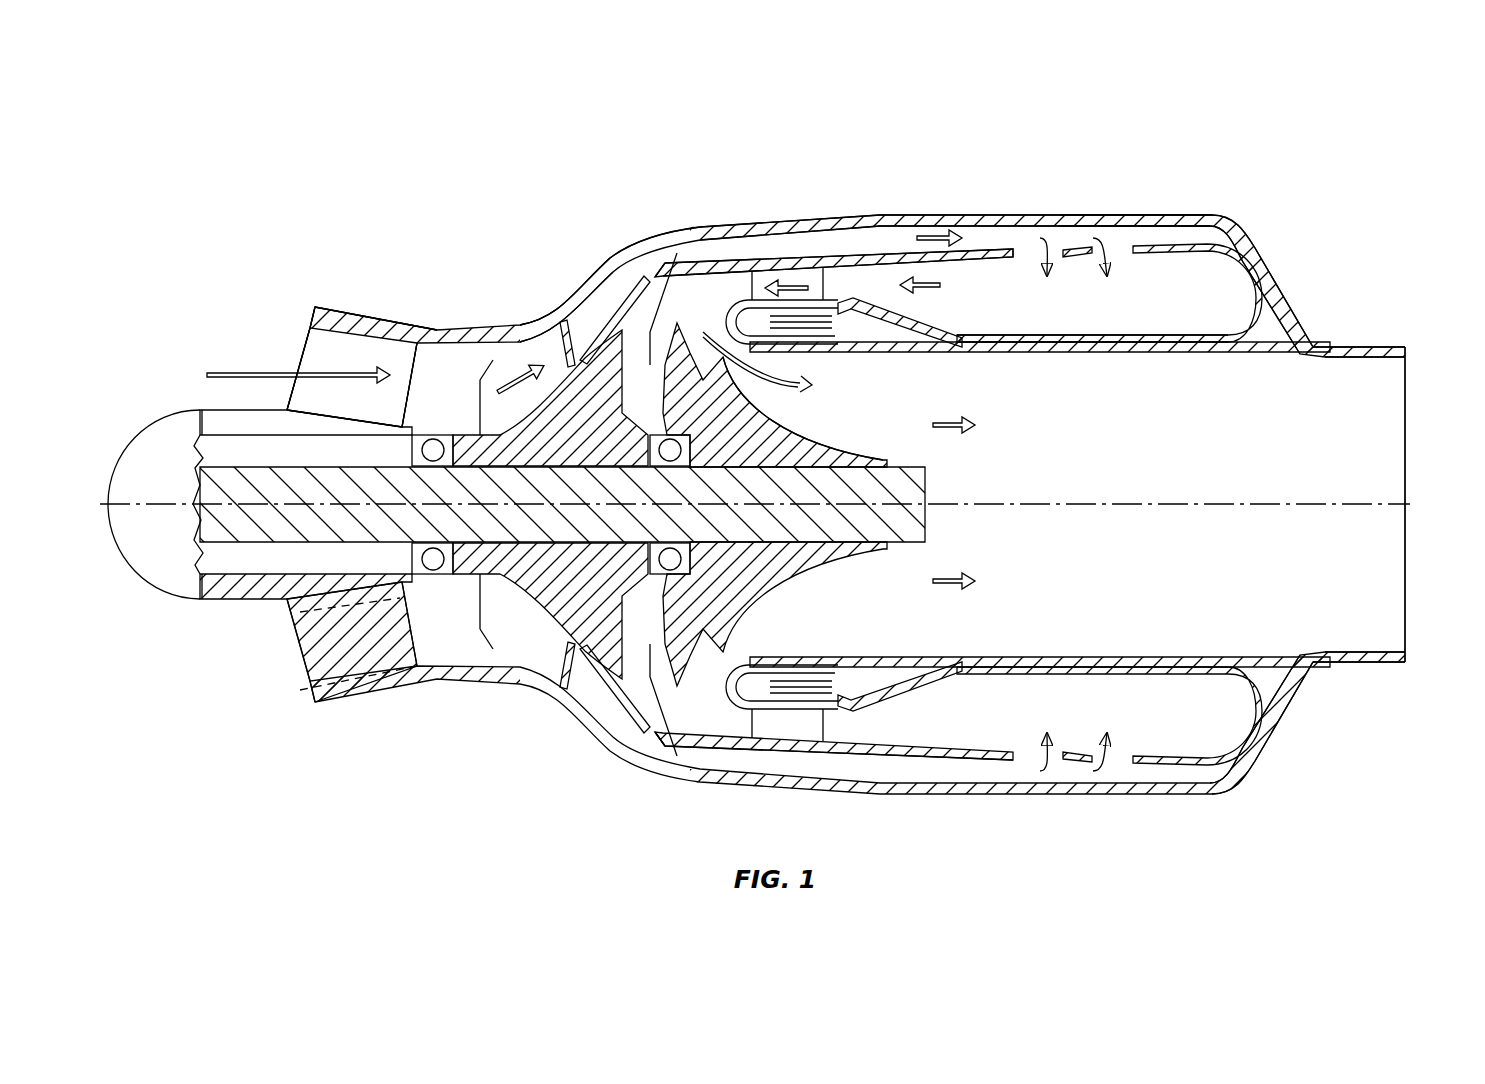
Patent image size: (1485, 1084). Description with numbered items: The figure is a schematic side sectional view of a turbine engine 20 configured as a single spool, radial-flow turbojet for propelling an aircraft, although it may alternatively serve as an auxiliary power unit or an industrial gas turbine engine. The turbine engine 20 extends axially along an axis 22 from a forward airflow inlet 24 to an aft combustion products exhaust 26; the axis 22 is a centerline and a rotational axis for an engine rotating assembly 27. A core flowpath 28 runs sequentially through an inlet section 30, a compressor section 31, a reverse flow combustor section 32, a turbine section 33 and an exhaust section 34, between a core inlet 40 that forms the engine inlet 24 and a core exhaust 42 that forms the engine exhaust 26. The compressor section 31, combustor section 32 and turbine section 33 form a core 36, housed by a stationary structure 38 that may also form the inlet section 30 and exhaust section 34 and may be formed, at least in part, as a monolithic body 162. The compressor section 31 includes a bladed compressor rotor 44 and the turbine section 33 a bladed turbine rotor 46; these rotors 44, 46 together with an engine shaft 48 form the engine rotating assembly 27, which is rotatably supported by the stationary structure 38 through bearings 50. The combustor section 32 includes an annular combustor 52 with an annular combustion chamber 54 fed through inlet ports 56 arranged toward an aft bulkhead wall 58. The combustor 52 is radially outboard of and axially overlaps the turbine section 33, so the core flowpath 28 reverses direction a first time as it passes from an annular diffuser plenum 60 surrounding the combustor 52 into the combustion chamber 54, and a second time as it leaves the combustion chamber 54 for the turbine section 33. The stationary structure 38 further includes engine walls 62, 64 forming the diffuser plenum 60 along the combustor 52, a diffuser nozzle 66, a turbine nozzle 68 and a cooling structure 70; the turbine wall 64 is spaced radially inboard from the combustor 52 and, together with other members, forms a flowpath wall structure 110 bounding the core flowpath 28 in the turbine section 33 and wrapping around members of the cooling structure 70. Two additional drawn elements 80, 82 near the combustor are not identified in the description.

The turbine engine 20 is at (288, 176).
The axis 22 is at (1310, 514).
The airflow inlet 24 is at (300, 348).
The airflow inlet 40 is at (312, 367).
The combustion products exhaust 26 is at (1407, 440).
The combustion products exhaust 42 is at (1436, 504).
The engine rotating assembly 27 is at (830, 440).
The core flowpath 28 is at (1047, 454).
The inlet section 30 is at (352, 302).
The compressor section 31 is at (524, 305).
The combustor section 32 is at (955, 205).
The turbine section 33 is at (707, 300).
The exhaust section 34 is at (1363, 333).
The core 36 is at (840, 205).
The stationary structure 38 is at (607, 248).
The monolithic body 162 is at (608, 465).
The bladed compressor rotor 44 is at (518, 672).
The bladed turbine rotor 46 is at (783, 580).
The engine shaft 48 is at (925, 522).
The bearings 50 is at (675, 575).
The annular combustor 52 is at (990, 248).
The annular combustion chamber 54 is at (997, 327).
The inlet ports 56 is at (1058, 265).
The aft bulkhead wall 58 is at (1277, 278).
The annular diffuser plenum 60 is at (878, 240).
The engine wall 62 is at (1103, 213).
The turbine wall 64 is at (1015, 353).
The diffuser nozzle 66 is at (655, 258).
The turbine nozzle 68 is at (840, 289).
The cooling structure 70 is at (752, 302).
The return loop 80 is at (1170, 240).
The inner wall 82 is at (1127, 344).
The flowpath wall structure 110 is at (722, 704).